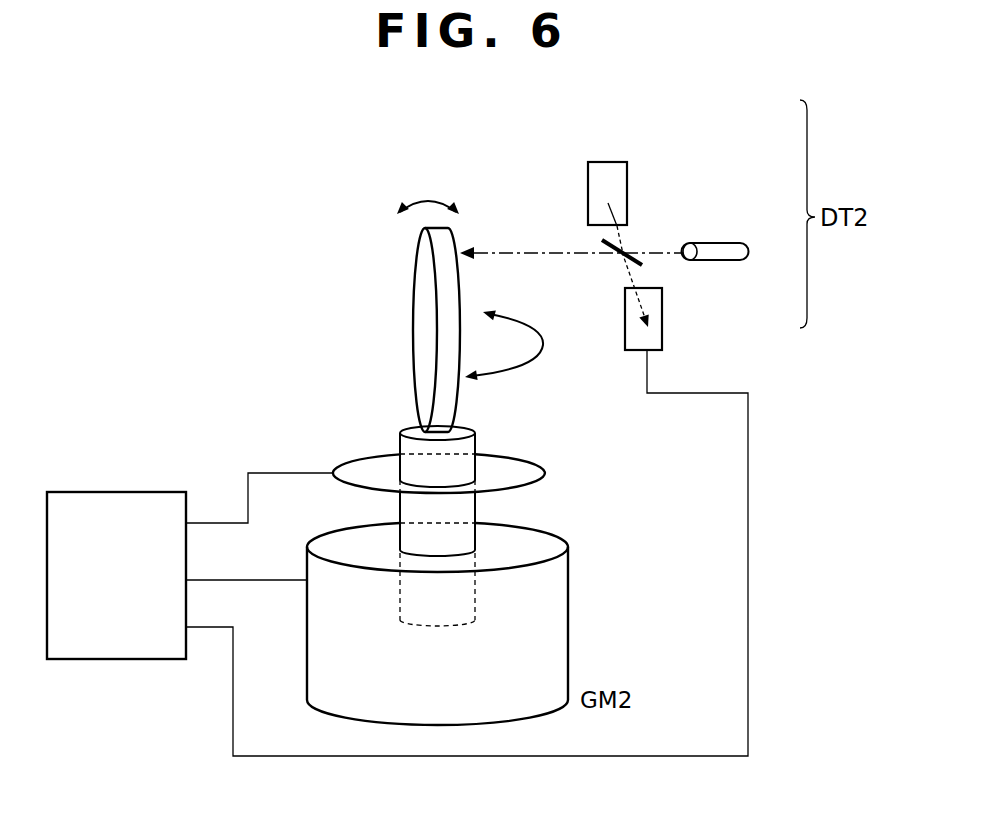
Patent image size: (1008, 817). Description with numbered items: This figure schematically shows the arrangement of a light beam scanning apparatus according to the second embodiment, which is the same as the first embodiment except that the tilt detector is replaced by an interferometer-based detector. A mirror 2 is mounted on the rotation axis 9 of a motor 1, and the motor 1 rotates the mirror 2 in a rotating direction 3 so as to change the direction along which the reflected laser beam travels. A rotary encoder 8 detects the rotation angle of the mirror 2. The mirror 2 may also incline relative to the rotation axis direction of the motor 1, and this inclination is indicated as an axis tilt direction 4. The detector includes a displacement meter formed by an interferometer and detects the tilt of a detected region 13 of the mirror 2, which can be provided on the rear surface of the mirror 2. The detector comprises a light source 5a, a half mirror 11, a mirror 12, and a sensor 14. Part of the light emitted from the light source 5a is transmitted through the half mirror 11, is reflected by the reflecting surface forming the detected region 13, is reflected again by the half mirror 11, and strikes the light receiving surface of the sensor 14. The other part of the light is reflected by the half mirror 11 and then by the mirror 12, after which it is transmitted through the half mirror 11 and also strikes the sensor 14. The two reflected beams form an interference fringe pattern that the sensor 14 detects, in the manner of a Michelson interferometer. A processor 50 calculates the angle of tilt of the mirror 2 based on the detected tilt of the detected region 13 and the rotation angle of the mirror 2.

The motor 1 is at (543, 612).
The mirror 2 is at (425, 295).
The rotating direction 3 is at (530, 366).
The axis tilt direction 4 is at (427, 192).
The light source 5a is at (720, 250).
The rotary encoder 8 is at (510, 470).
The rotation axis 9 is at (455, 516).
The half mirror 11 is at (623, 242).
The mirror 12 is at (615, 172).
The detected region 13 is at (462, 251).
The sensor 14 is at (665, 307).
The processor 50 is at (118, 660).